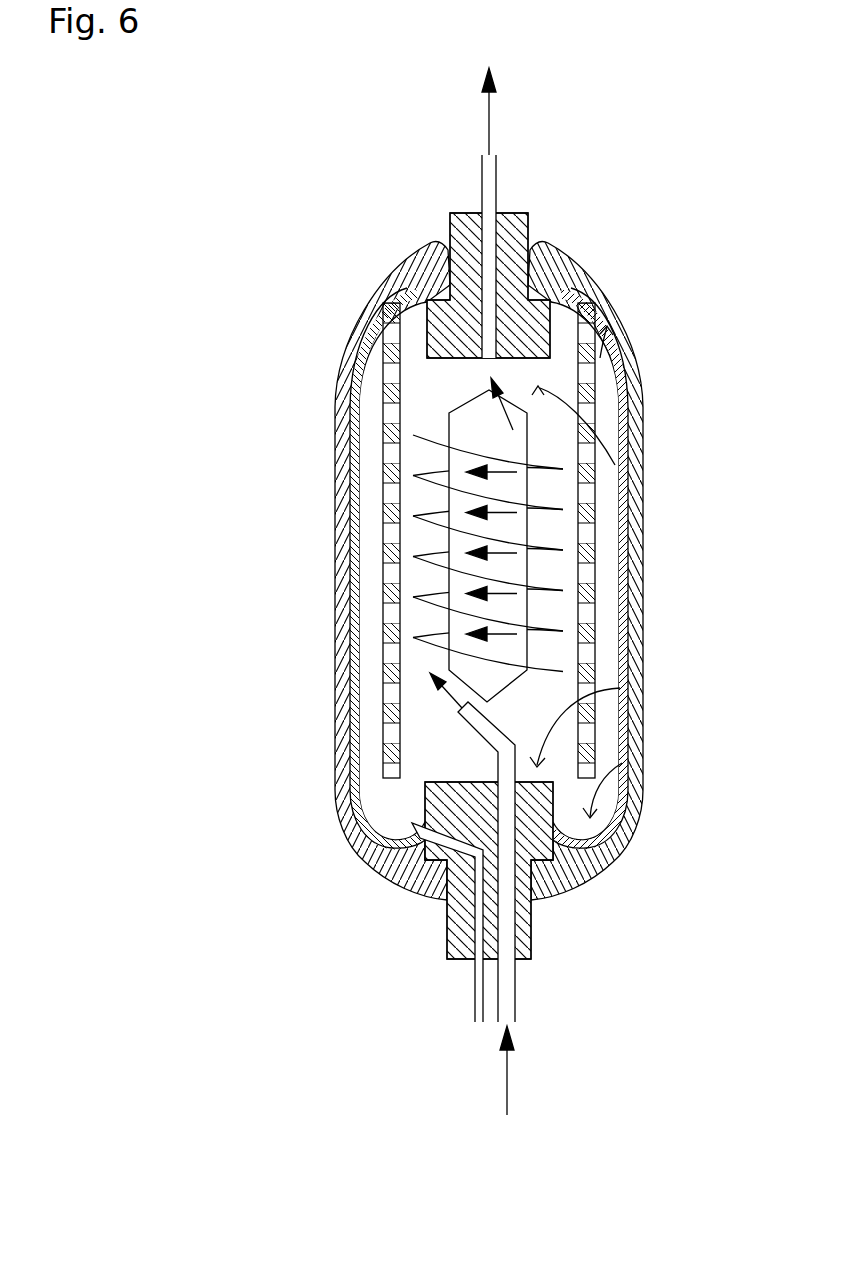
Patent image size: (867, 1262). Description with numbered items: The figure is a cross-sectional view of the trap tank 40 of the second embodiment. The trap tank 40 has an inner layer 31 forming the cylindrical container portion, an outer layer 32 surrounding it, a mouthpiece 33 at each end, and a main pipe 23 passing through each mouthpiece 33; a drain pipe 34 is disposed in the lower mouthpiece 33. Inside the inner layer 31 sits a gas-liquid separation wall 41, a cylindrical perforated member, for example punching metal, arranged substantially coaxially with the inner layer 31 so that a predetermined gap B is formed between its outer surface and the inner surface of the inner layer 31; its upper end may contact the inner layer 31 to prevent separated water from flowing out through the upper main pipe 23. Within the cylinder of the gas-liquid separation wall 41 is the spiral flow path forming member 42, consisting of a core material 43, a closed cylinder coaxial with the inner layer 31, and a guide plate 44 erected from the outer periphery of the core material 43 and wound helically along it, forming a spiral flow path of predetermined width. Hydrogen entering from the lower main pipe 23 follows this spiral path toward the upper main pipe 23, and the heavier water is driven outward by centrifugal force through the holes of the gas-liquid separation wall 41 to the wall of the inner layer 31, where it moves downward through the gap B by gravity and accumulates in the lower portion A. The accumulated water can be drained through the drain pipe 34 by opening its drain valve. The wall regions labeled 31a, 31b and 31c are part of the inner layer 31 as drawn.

The trap tank 40 is at (293, 232).
The main pipe 23 is at (482, 172).
The mouthpiece 33 is at (448, 225).
The spiral flow path forming member 42 is at (445, 388).
The outer layer 32 is at (340, 430).
The inner layer 31 is at (630, 612).
The inner wall 31a is at (622, 533).
The opening 31b is at (620, 372).
The flow passage 31c is at (615, 465).
The gas-liquid separation wall 41 is at (392, 543).
The core material 43 is at (414, 546).
The guide plate 44 is at (455, 600).
The drain pipe 34 is at (475, 997).
The lower portion of inner layer A is at (383, 800).
The gap B is at (385, 667).